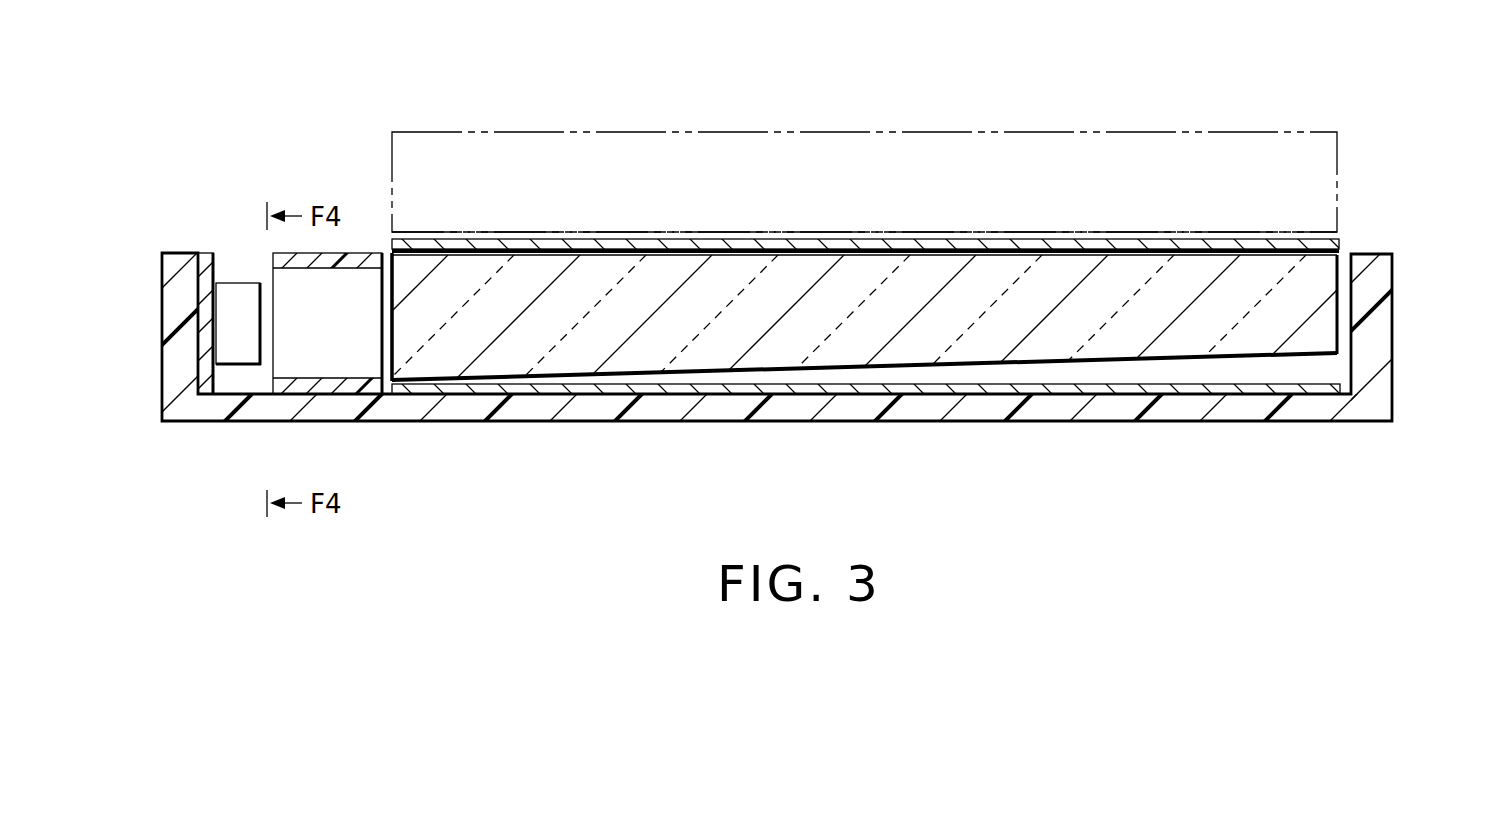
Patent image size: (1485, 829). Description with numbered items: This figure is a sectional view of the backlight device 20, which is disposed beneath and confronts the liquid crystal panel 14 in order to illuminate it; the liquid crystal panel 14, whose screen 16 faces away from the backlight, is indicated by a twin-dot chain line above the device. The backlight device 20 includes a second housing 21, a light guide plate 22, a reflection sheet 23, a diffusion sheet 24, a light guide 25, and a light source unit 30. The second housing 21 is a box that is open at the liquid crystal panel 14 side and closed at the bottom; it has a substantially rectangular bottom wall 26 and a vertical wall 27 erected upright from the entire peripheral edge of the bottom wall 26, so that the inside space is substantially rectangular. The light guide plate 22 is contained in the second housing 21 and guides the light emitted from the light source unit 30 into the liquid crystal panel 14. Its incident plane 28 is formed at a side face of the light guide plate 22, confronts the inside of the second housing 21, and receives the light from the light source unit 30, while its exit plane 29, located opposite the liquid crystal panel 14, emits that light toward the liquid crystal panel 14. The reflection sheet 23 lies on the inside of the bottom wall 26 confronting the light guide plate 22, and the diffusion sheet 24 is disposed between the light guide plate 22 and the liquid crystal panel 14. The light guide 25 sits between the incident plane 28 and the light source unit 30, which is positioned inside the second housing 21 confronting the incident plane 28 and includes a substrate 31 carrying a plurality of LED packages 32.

The liquid crystal panel 14 is at (1017, 130).
The screen 16 is at (730, 130).
The backlight device 20 is at (1366, 232).
The second housing 21 is at (1392, 340).
The light guide plate 22 is at (1328, 312).
The reflection sheet 23 is at (1288, 405).
The diffusion sheet 24 is at (1243, 228).
The light guide 25 is at (356, 256).
The bottom wall 26 is at (1000, 398).
The vertical wall 27 is at (172, 304).
The incident plane 28 is at (390, 328).
The exit plane 29 is at (658, 250).
The light source unit 30 is at (236, 256).
The substrate 31 is at (208, 252).
The LED package 32 is at (238, 355).